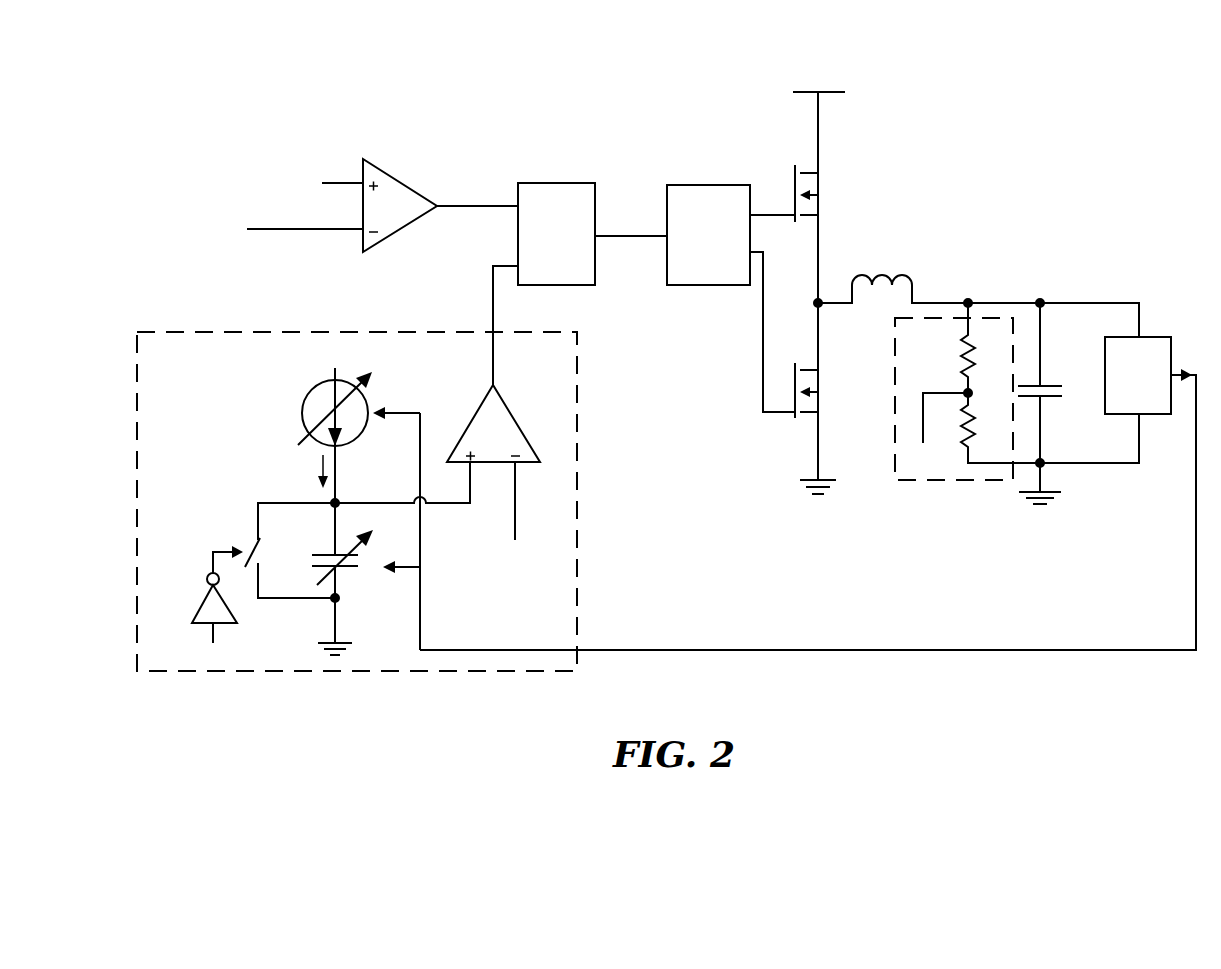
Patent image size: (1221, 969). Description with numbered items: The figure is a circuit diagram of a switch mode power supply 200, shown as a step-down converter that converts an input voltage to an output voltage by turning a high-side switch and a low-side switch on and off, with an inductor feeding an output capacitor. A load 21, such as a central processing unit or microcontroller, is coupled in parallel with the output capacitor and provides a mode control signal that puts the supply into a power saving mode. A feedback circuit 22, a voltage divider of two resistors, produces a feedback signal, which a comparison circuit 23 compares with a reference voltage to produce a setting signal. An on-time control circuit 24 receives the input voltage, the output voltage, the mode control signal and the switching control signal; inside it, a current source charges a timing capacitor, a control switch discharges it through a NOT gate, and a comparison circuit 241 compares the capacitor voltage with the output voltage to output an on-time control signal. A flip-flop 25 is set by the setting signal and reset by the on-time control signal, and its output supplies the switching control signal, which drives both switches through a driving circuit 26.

The switch mode power supply 200 is at (1074, 128).
The load 21 is at (1171, 340).
The feedback circuit 22 is at (932, 483).
The comparison circuit 23 is at (383, 170).
The on-time control circuit 24 is at (580, 483).
The comparison circuit 241 is at (515, 422).
The flip-flop 25 is at (568, 184).
The driving circuit 26 is at (709, 185).